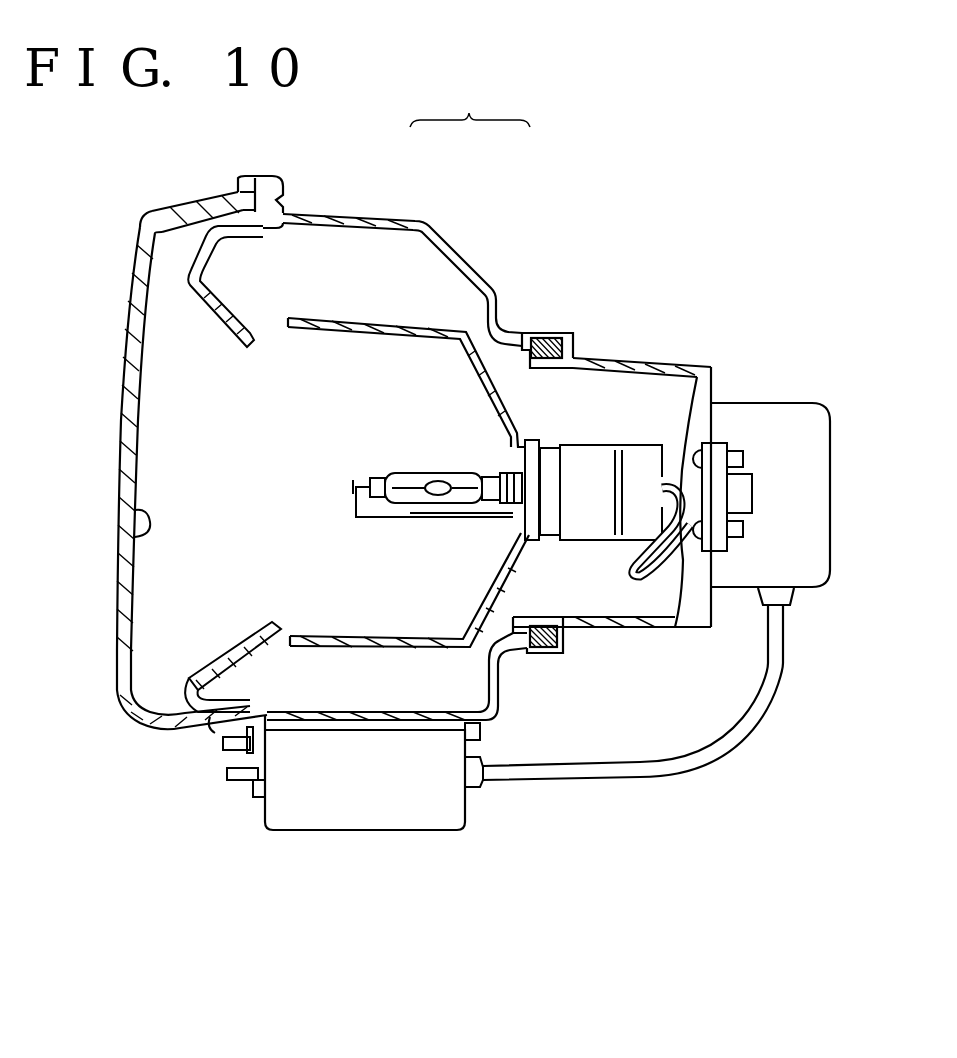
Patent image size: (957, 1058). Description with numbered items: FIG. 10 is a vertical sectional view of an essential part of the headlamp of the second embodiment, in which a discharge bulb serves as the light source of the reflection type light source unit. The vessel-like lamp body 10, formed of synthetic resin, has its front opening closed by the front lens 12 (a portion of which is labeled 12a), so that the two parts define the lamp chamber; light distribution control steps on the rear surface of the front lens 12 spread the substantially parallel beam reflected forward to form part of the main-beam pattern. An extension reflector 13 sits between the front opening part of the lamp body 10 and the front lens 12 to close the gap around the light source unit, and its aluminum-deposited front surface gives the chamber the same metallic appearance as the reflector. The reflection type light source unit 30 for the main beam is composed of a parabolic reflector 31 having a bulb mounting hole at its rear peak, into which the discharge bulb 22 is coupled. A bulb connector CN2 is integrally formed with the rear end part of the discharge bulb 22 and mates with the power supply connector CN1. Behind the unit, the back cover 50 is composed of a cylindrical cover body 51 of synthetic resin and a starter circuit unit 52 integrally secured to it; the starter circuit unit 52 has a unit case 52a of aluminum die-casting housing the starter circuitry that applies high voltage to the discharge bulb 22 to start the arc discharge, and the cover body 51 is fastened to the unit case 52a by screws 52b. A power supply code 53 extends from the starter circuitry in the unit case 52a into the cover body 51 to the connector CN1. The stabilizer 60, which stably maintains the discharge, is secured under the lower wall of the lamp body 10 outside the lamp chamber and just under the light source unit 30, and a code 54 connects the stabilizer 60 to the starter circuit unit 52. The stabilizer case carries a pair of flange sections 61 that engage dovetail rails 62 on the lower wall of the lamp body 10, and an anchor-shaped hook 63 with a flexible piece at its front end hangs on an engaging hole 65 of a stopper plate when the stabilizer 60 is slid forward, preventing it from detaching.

The lamp body 10 is at (490, 282).
The front lens 12 is at (122, 410).
The lens protrusion 12a is at (130, 525).
The extension reflector 13 is at (211, 306).
The discharge bulb 22 is at (439, 452).
The light source unit of reflection type 30 is at (470, 102).
The parabolic reflector 31 is at (403, 323).
The back cover 50 is at (710, 356).
The cover body 51 is at (625, 625).
The starter circuit unit 52 is at (811, 441).
The unit case 52a is at (782, 390).
The screws 52b is at (745, 531).
The power supply code 53 is at (680, 592).
The code 54 is at (767, 707).
The stabilizer 60 is at (365, 824).
The flange sections 61 is at (405, 730).
The rails 62 is at (480, 738).
The anchor-shaped hook 63 is at (227, 780).
The engaging hole 65 is at (260, 780).
The power supply connector CN1 is at (600, 445).
The bulb connector CN2 is at (553, 452).